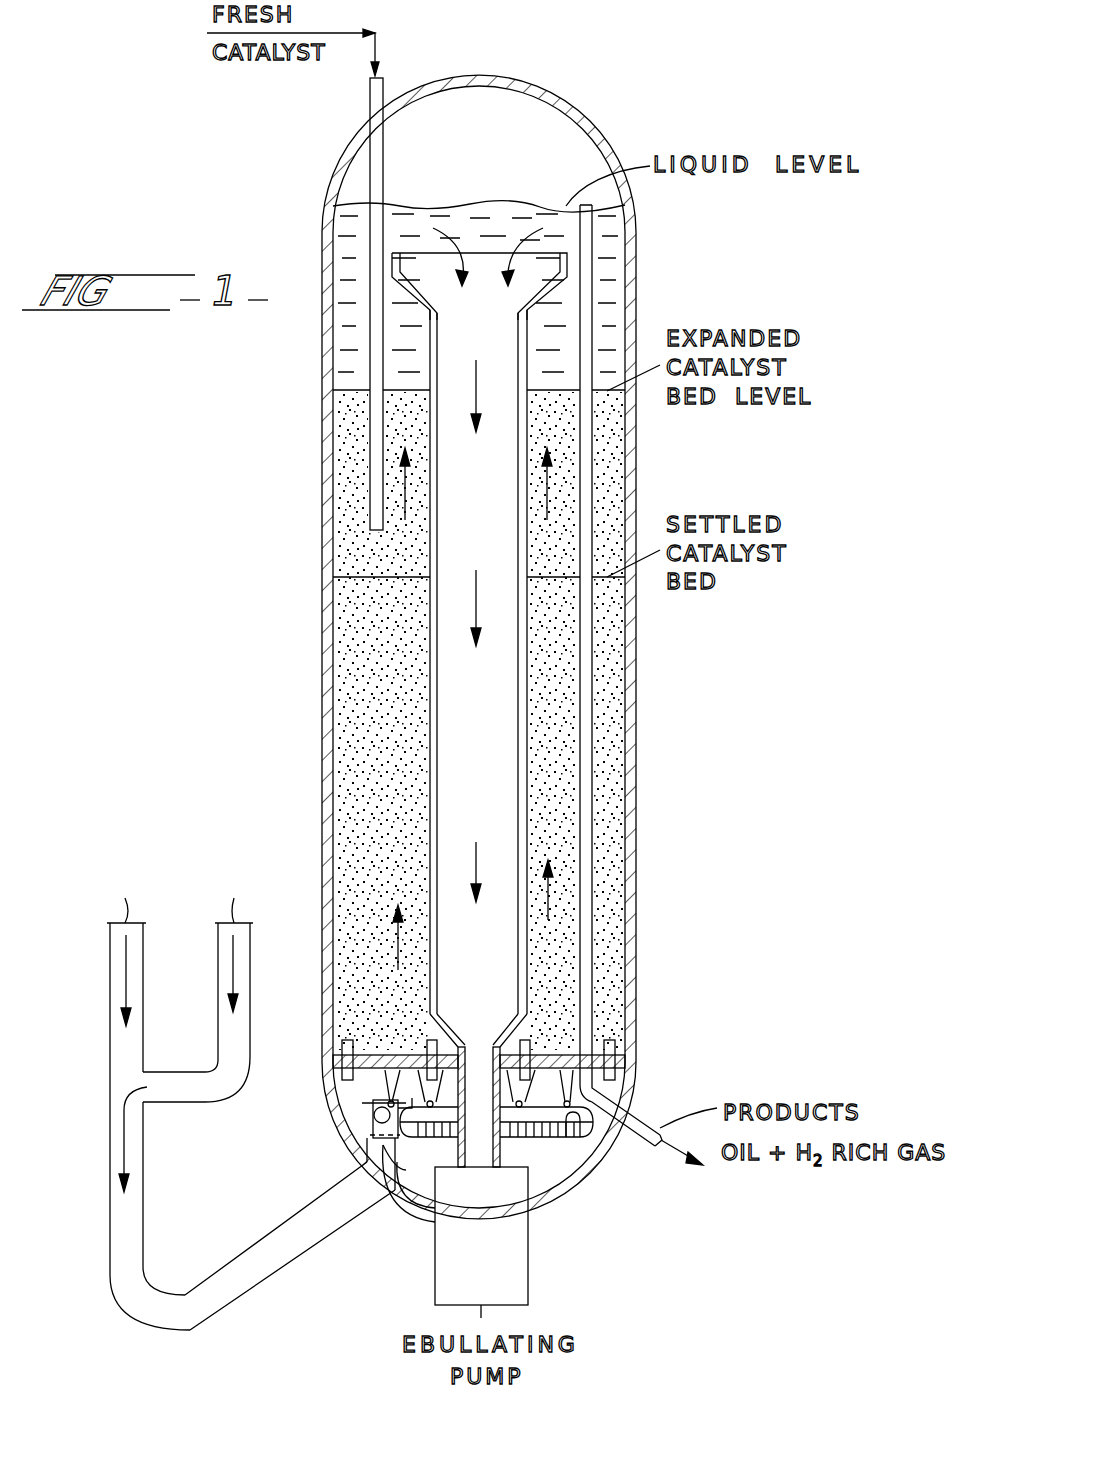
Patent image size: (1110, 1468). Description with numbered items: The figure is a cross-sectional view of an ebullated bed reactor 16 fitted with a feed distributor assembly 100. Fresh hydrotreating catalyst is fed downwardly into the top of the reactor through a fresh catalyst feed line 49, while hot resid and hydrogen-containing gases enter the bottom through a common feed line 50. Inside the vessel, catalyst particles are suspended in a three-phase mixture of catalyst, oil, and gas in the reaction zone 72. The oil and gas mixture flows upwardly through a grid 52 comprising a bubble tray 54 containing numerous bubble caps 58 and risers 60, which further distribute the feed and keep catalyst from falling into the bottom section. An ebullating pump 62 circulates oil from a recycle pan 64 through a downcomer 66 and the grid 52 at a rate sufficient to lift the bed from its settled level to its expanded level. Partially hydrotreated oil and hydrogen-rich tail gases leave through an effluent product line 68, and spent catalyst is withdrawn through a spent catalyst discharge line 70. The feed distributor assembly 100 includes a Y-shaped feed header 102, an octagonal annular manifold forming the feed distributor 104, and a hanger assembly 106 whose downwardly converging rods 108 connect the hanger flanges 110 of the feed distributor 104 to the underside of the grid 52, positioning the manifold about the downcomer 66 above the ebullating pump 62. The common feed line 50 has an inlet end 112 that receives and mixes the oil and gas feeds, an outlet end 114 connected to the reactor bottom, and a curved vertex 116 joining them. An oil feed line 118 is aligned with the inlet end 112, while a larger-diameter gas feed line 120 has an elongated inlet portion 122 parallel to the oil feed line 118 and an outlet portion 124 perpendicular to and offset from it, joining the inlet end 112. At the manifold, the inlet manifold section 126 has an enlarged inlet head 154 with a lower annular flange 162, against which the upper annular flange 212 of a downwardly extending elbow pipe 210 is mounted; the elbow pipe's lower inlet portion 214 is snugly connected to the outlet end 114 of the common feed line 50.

The ebullated bed reactor 16 is at (487, 76).
The fresh catalyst feed line 49 is at (370, 94).
The recycle pan 64 is at (567, 266).
The downcomer 66 is at (432, 712).
The reaction zone 72 is at (360, 637).
The hanger assembly 106 is at (462, 1053).
The rods 108 is at (497, 1077).
The hanger flanges 110 is at (598, 1097).
The effluent product line 68 is at (640, 1133).
The risers 60 is at (618, 1076).
The bubble caps 58 is at (617, 1038).
The grid 52 is at (385, 1045).
The bubble tray 54 is at (550, 1050).
The feed distributor assembly 100 is at (547, 1140).
The spent catalyst discharge line 70 is at (330, 1148).
The upper annular flange 212 is at (364, 1125).
The lower annular flange 162 is at (376, 1118).
The inlet manifold section 126 is at (374, 1108).
The inlet head 154 is at (372, 1098).
The elbow pipe 210 is at (336, 1147).
The feed distributor 104 is at (432, 1166).
The lower inlet portion 214 is at (385, 1225).
The ebullating pump 62 is at (528, 1285).
The feed header 102 is at (216, 1115).
The oil feed line 118 is at (110, 974).
The inlet portion 122 is at (282, 973).
The gas feed line 120 is at (210, 1066).
The outlet portion 124 is at (182, 1102).
The inlet end 112 is at (143, 1155).
The common feed line 50 is at (193, 1294).
The curved vertex 116 is at (148, 1322).
The outlet end 114 is at (287, 1210).